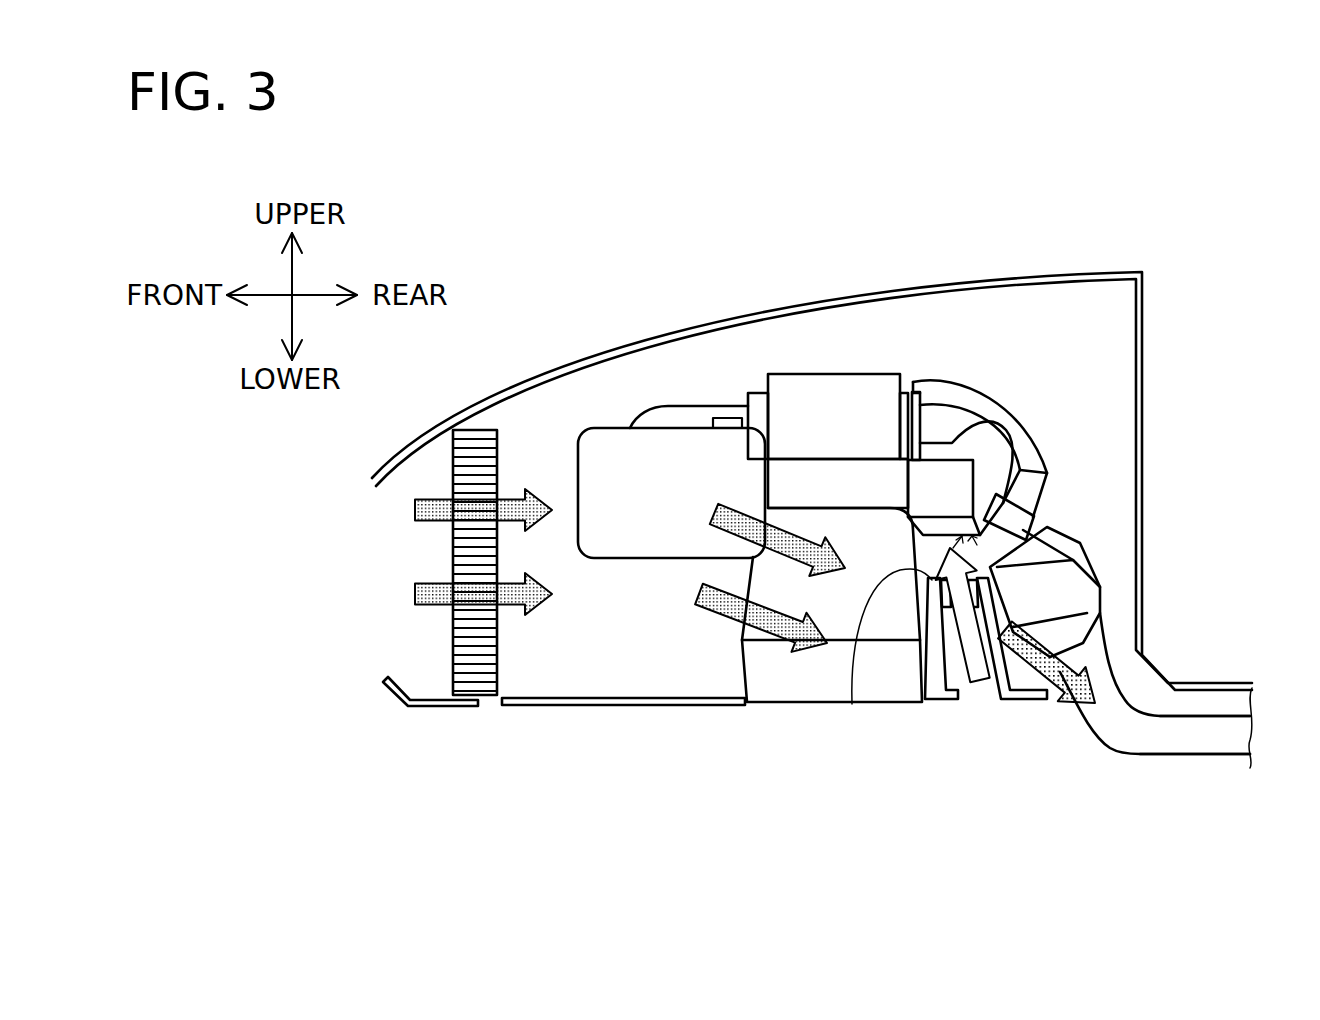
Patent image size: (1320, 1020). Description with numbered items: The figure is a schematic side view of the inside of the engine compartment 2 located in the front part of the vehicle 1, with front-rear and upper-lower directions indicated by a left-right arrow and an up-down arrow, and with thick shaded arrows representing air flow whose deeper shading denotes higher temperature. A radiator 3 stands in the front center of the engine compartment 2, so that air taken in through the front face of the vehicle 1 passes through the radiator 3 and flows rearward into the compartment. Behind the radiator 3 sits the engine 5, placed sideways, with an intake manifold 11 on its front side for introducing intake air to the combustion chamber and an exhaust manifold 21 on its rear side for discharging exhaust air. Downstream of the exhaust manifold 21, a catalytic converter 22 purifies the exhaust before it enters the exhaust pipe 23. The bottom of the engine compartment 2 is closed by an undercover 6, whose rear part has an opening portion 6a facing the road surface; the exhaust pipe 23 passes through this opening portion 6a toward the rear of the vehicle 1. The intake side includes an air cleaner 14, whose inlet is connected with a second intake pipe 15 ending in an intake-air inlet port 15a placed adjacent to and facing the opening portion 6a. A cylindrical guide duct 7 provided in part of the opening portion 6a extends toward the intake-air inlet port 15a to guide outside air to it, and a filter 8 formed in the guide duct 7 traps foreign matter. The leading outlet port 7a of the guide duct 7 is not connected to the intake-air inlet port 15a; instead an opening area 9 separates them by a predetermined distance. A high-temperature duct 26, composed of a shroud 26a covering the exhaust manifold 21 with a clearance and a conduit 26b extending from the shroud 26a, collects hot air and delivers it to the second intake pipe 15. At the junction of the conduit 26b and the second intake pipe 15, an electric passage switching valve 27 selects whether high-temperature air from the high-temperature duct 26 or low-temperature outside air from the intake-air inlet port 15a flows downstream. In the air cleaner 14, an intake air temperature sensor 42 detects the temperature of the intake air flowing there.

The vehicle 1 is at (650, 305).
The engine compartment 2 is at (589, 657).
The radiator 3 is at (453, 655).
The engine 5 is at (828, 374).
The undercover 6 is at (627, 706).
The opening portion 6a is at (1050, 702).
The guide duct 7 is at (945, 700).
The outlet port 7a is at (852, 704).
The filter 8 is at (938, 608).
The opening area 9 is at (1000, 568).
The intake manifold 11 is at (685, 406).
The air cleaner 14 is at (632, 560).
The second intake pipe 15 is at (835, 470).
The intake-air inlet port 15a is at (968, 532).
The exhaust manifold 21 is at (970, 397).
The catalytic converter 22 is at (1040, 517).
The exhaust pipe 23 is at (1183, 754).
The high-temperature duct 26 is at (966, 380).
The shroud 26a is at (985, 392).
The conduit 26b is at (992, 433).
The passage switching valve 27 is at (930, 505).
The intake air temperature sensor 42 is at (732, 418).